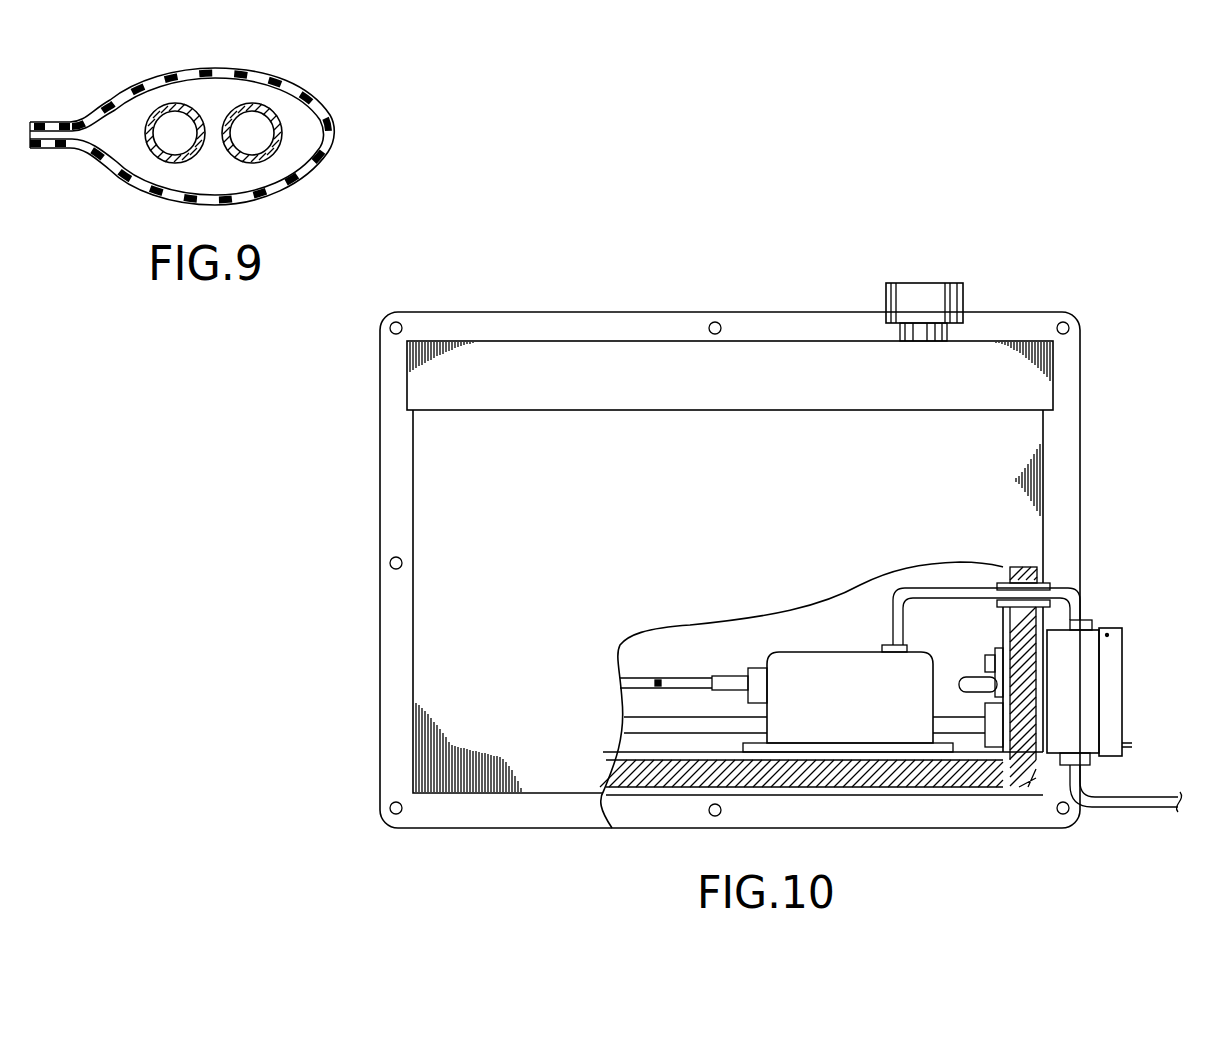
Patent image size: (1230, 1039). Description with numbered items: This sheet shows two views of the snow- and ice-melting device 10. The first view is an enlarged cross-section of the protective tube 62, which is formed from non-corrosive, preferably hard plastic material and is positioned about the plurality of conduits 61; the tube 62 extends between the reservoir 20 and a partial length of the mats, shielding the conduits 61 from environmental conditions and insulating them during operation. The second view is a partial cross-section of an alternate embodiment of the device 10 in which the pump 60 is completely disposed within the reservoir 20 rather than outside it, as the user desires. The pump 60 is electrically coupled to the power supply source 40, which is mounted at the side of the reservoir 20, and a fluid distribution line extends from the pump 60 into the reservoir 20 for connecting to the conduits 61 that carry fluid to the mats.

In FIG. 10, the device 10 is at (603, 230).
In FIG. 10, the reservoir 20 is at (742, 312).
In FIG. 10, the power supply source 40 is at (1113, 667).
In FIG. 10, the pump 60 is at (892, 712).
In FIG. 9, the conduits 61 is at (252, 133).
In FIG. 9, the protective tube 62 is at (328, 118).